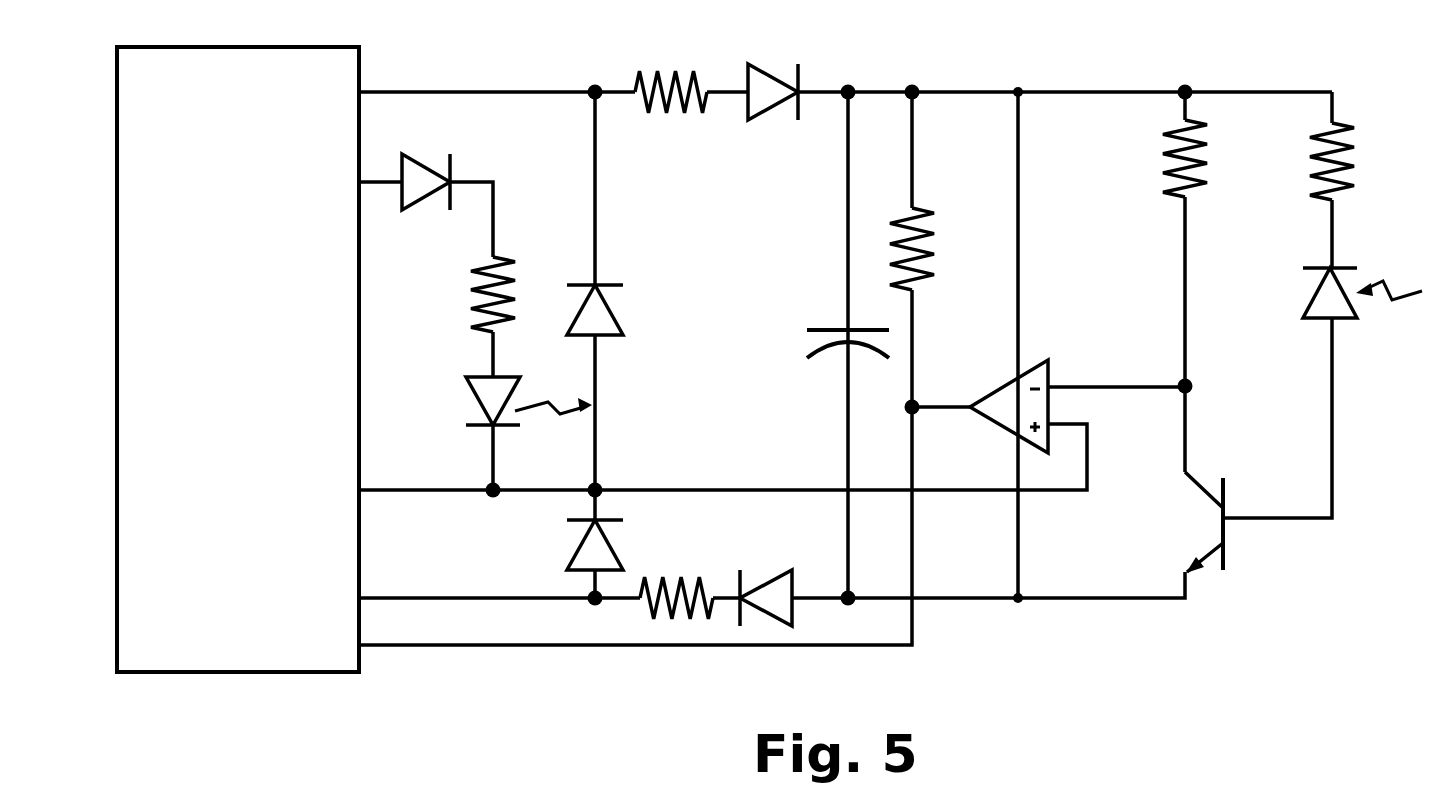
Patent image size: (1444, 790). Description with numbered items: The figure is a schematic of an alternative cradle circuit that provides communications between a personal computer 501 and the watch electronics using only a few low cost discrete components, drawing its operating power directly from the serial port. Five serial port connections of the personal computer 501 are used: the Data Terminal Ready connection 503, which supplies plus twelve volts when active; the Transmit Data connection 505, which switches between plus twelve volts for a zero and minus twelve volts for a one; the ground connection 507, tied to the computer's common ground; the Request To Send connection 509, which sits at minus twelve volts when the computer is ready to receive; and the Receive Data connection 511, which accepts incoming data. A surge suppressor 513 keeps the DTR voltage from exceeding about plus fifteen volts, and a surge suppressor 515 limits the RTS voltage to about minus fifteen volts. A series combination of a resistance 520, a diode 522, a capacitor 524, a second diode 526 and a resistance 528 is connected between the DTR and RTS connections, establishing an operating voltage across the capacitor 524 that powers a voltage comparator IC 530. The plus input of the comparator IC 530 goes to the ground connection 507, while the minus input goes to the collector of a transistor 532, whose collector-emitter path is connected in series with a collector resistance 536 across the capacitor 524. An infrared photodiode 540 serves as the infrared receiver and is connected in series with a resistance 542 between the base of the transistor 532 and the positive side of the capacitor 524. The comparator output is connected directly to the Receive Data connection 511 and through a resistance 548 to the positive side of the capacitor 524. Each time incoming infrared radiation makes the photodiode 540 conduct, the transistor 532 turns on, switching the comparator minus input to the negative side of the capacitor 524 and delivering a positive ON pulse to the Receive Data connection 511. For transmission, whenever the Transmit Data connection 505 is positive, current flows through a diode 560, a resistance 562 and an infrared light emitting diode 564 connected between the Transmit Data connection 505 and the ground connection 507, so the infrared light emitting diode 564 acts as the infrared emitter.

The personal computer 501 is at (362, 390).
The Data Terminal Ready connection 503 is at (371, 90).
The Transmit Data connection 505 is at (377, 180).
The ground connection 507 is at (370, 488).
The Request To Send connection 509 is at (390, 597).
The Receive Data connection 511 is at (372, 650).
The surge suppressor 513 is at (617, 303).
The surge suppressor 515 is at (613, 543).
The resistance 520 is at (655, 70).
The diode 522 is at (762, 63).
The capacitor 524 is at (832, 330).
The second diode 526 is at (768, 578).
The resistance 528 is at (655, 580).
The voltage comparator IC 530 is at (1037, 360).
The transistor 532 is at (1228, 548).
The collector resistance 536 is at (1173, 158).
The infrared photodiode 540 is at (1307, 303).
The resistance 542 is at (1304, 161).
The resistance 548 is at (933, 260).
The diode 560 is at (413, 212).
The resistance 562 is at (518, 290).
The infrared light emitting diode 564 is at (520, 393).